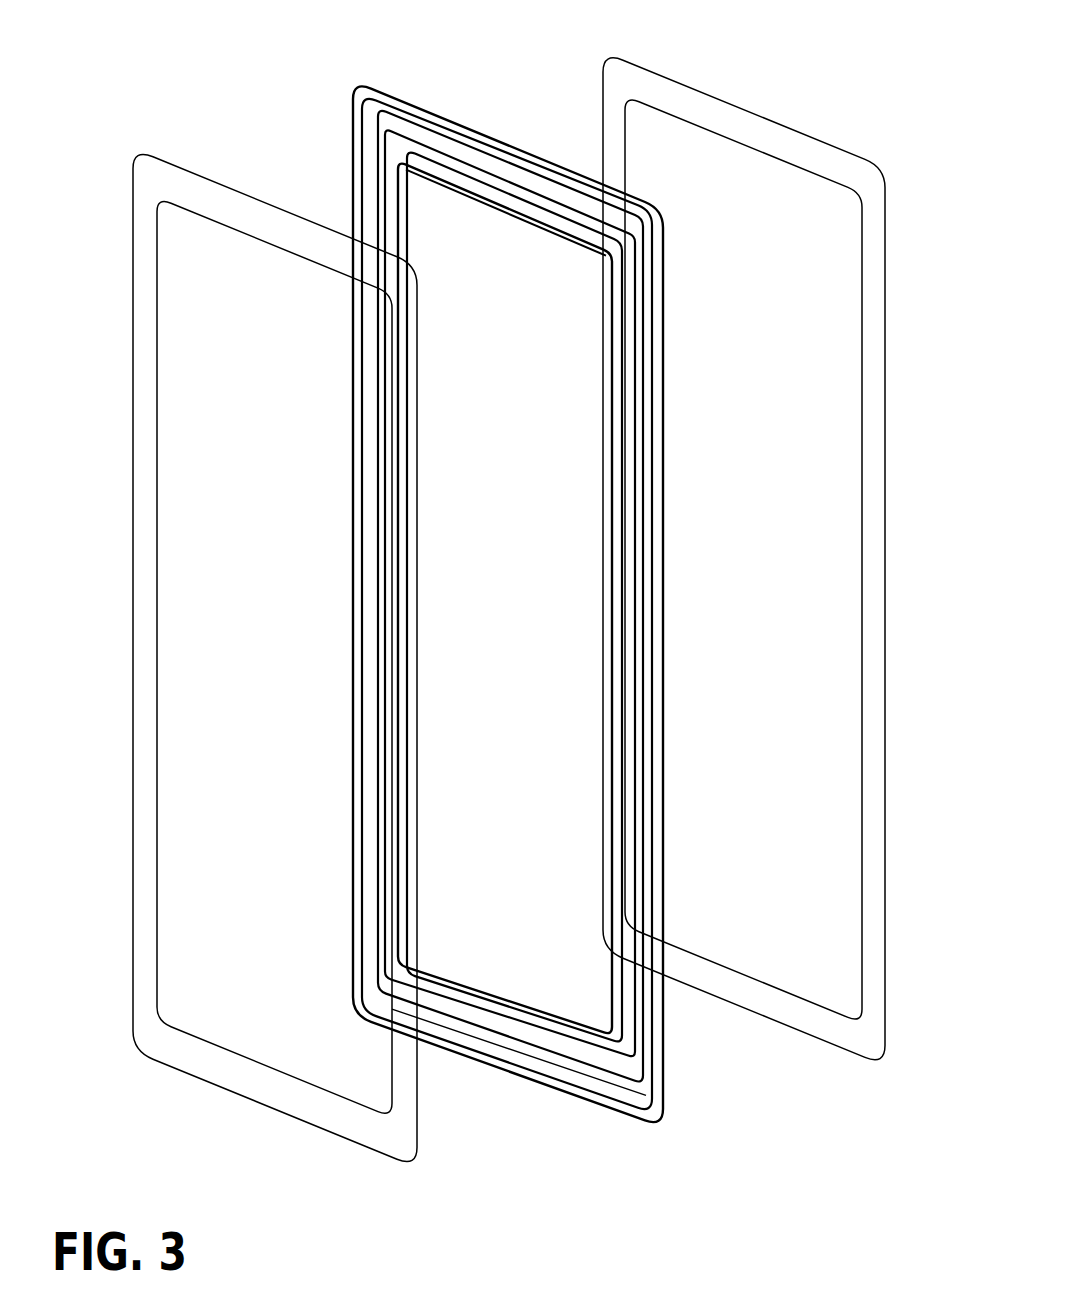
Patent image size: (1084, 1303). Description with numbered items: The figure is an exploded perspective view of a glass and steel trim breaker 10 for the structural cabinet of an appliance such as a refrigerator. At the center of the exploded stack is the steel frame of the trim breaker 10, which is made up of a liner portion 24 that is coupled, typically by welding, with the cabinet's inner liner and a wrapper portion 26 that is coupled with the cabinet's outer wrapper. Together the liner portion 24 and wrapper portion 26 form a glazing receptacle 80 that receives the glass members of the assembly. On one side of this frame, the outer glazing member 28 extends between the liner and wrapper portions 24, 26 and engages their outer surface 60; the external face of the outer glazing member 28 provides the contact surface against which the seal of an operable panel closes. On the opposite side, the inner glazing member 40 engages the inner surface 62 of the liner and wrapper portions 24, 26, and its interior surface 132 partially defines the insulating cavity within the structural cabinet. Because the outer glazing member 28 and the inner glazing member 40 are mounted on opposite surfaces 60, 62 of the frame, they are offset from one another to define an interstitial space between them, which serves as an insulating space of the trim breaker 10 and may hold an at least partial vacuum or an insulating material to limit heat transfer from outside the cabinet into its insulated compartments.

The trim breaker 10 is at (411, 38).
The liner portion 24 is at (543, 223).
The wrapper portion 26 is at (405, 100).
The outer glazing member 28 is at (873, 260).
The inner glazing member 40 is at (148, 291).
The outer surface 60 is at (503, 143).
The inner surface 62 is at (377, 145).
The glazing receptacle 80 is at (679, 401).
The interior surface 132 is at (145, 600).